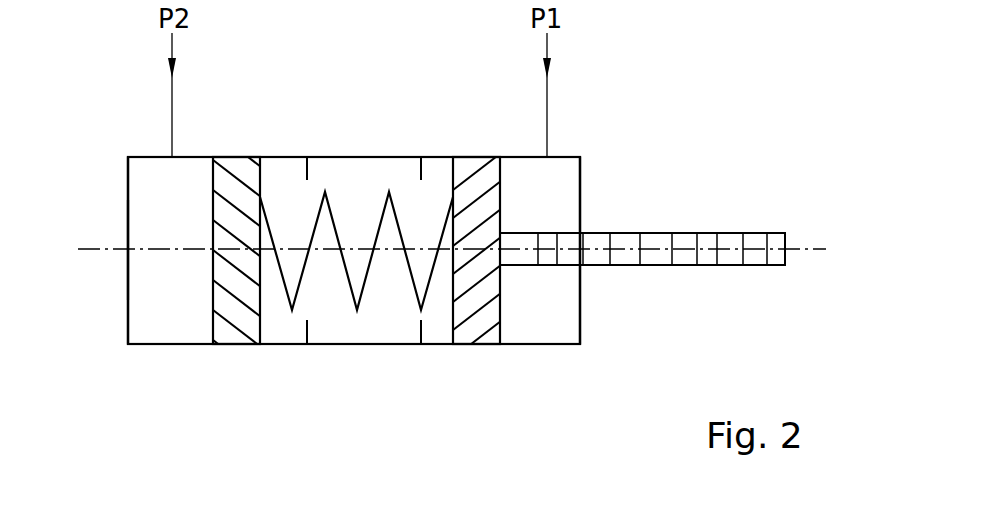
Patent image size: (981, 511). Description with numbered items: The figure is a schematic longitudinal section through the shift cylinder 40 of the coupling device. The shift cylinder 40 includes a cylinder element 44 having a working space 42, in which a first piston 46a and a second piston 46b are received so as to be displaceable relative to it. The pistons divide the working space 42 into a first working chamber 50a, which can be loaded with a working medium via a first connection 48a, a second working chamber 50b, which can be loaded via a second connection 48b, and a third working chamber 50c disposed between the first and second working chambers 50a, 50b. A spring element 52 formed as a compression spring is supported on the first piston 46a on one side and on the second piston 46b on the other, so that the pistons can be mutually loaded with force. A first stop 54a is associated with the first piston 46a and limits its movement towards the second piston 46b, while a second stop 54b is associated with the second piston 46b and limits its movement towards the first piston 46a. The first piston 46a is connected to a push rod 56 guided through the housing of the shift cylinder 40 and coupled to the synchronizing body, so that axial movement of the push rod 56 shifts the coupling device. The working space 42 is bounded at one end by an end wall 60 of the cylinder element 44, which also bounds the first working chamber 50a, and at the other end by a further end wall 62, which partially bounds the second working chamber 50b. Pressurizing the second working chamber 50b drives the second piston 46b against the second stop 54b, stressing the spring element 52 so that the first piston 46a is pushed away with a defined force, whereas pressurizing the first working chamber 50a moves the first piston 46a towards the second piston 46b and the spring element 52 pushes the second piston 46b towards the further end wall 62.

The shift cylinder 40 is at (184, 389).
The working space 42 is at (112, 316).
The cylinder element 44 is at (152, 157).
The first piston 46a is at (473, 172).
The second piston 46b is at (241, 173).
The first connection 48a is at (547, 108).
The second connection 48b is at (172, 100).
The first working chamber 50a is at (538, 314).
The second working chamber 50b is at (188, 308).
The third working chamber 50c is at (376, 315).
The spring element 52 is at (337, 223).
The first stop 54a is at (421, 326).
The second stop 54b is at (305, 332).
The push rod 56 is at (698, 247).
The end wall 60 is at (580, 183).
The further end wall 62 is at (128, 207).